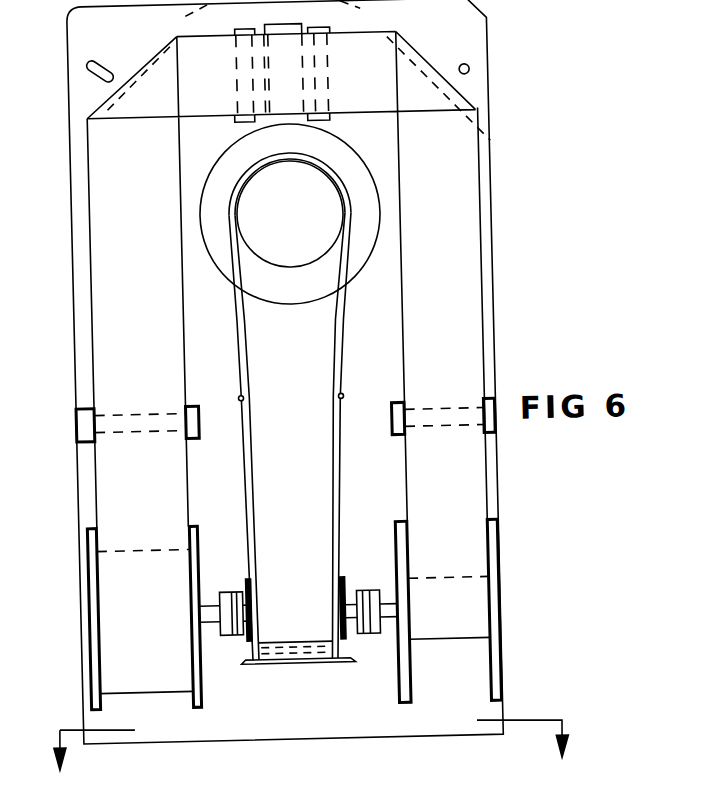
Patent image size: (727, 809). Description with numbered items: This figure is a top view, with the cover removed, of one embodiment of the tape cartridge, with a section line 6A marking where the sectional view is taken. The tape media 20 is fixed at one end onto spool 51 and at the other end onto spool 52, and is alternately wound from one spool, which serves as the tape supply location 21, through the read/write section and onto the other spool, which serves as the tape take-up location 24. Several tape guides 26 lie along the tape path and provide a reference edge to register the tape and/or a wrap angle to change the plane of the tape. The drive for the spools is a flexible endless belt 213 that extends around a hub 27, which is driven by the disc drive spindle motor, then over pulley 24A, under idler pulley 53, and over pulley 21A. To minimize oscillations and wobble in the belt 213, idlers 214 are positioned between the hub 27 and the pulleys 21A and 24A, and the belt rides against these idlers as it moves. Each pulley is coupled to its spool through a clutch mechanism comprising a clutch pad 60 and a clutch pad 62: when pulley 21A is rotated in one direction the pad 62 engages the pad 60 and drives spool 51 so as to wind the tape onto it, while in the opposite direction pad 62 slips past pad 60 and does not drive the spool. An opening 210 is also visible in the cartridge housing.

The tape media 20 is at (463, 261).
The hole 210 is at (479, 62).
The hub 27 is at (300, 221).
The flexible belt 213 is at (330, 353).
The idler 214 is at (339, 396).
The tape guides 26 is at (491, 421).
The tape supply location 21 is at (123, 618).
The tape take-up location 24 is at (467, 610).
The pulley 21A is at (238, 584).
The pulley 24A is at (336, 586).
The supply/takeup spool 51 is at (86, 677).
The supply/takeup spool 52 is at (492, 685).
The idler pulley 53 is at (271, 664).
The clutch pad 60 is at (376, 692).
The clutch pad 62 is at (339, 669).
The section line 6A is at (313, 757).